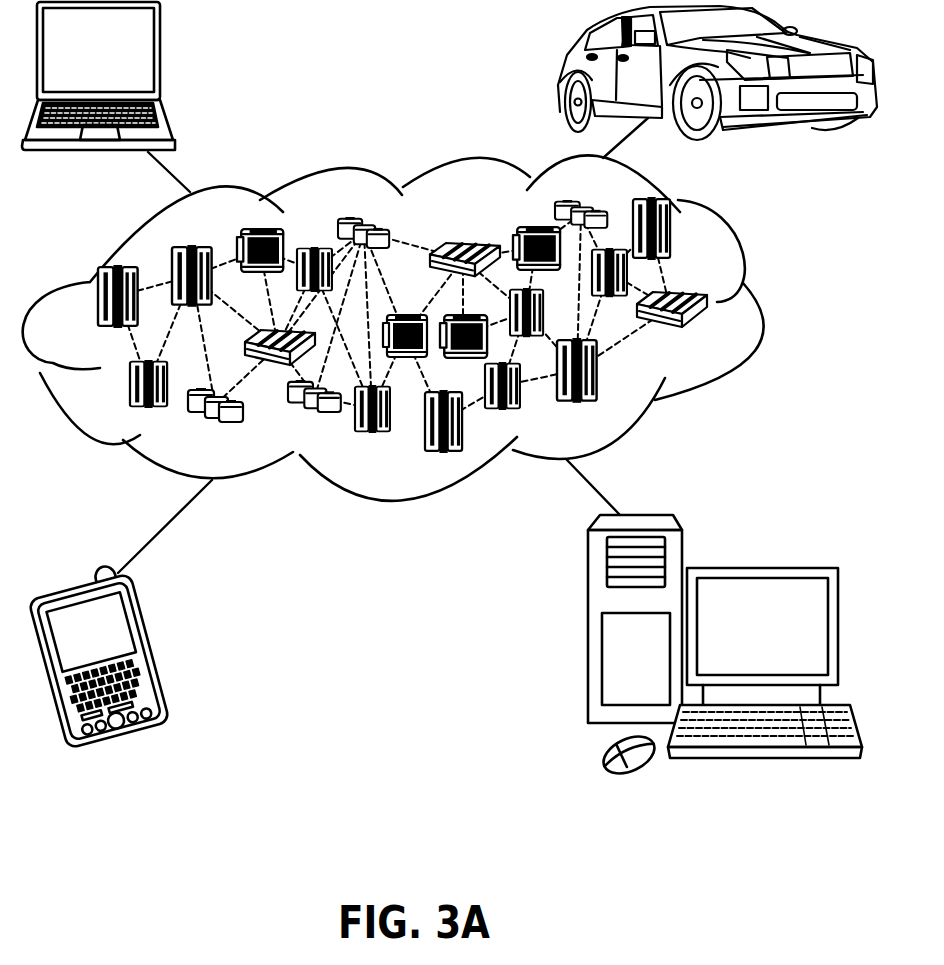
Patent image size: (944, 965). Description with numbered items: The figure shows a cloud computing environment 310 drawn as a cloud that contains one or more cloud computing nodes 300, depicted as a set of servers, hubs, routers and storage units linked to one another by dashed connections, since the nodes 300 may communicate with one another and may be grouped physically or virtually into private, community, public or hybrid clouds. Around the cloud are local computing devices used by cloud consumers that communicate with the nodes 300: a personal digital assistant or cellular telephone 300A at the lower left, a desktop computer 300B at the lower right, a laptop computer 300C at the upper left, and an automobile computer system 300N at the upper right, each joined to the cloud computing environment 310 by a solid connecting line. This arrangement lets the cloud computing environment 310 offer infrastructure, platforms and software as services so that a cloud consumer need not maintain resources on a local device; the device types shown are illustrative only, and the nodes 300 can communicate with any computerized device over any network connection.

The cloud computing nodes 300 is at (720, 338).
The cloud computing environment 310 is at (760, 303).
The personal digital assistant (PDA) or cellular telephone 300A is at (153, 655).
The desktop computer 300B is at (762, 568).
The laptop computer 300C is at (163, 57).
The automobile computer system 300N is at (560, 70).